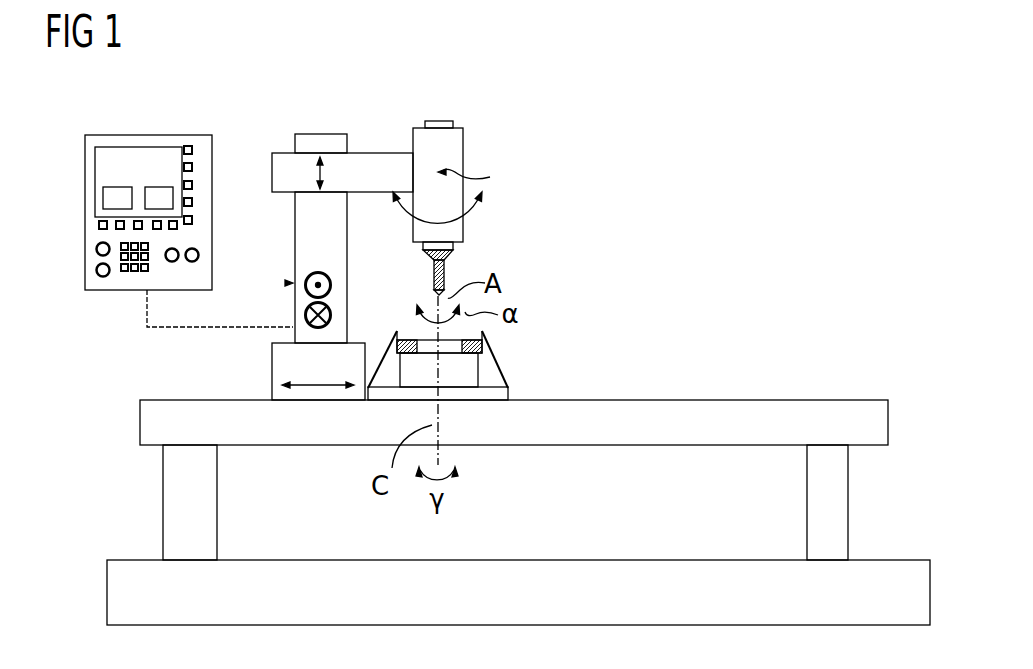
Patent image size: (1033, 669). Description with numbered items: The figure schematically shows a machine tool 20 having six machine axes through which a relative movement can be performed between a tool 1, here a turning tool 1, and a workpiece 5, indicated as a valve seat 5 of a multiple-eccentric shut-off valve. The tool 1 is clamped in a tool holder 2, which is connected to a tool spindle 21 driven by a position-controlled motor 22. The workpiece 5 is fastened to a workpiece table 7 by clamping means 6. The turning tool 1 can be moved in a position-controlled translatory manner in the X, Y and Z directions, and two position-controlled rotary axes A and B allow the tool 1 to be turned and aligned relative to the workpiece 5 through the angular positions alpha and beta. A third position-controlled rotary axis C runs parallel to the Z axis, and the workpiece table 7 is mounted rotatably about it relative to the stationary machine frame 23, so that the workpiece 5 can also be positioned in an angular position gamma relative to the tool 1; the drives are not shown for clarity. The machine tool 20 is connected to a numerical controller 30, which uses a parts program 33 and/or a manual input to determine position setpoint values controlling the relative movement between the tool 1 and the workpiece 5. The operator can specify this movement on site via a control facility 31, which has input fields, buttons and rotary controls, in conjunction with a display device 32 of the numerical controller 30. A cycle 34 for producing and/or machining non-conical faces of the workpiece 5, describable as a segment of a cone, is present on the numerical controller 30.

The tool 1 is at (435, 262).
The tool holder 2 is at (450, 262).
The workpiece 5 is at (487, 352).
The clamping means 6 is at (490, 370).
The workpiece table 7 is at (492, 395).
The machine tool 20 is at (561, 170).
The tool spindle 21 is at (443, 238).
The position-controlled motor 22 is at (453, 143).
The machine frame 23 is at (752, 412).
The numerical controller 30 is at (226, 153).
The control facility 31 is at (118, 280).
The display device 32 is at (137, 160).
The parts program 33 is at (163, 198).
The cycle 34 is at (117, 198).